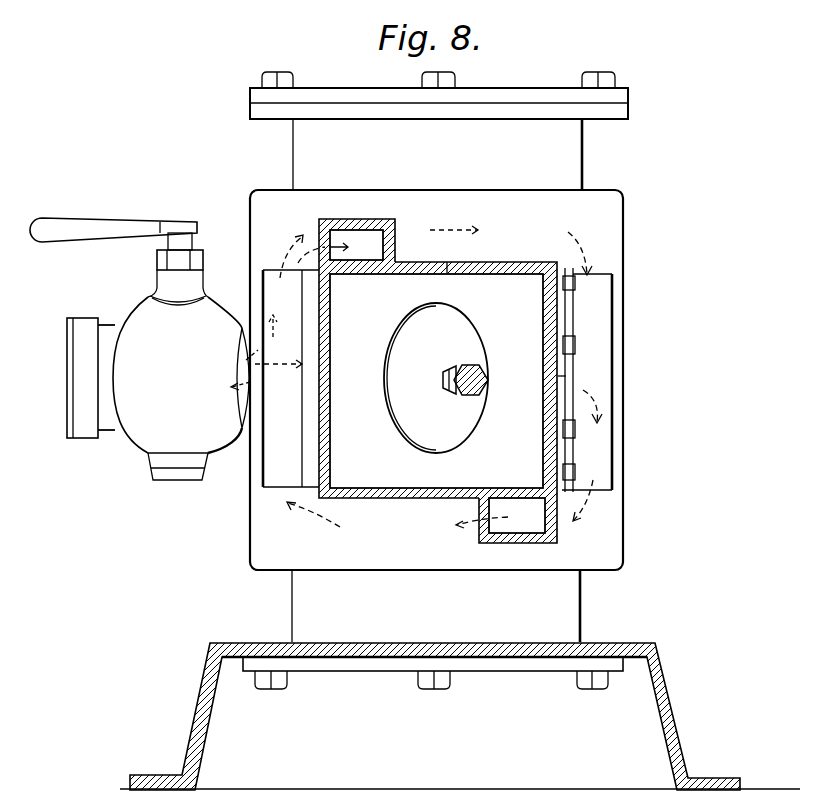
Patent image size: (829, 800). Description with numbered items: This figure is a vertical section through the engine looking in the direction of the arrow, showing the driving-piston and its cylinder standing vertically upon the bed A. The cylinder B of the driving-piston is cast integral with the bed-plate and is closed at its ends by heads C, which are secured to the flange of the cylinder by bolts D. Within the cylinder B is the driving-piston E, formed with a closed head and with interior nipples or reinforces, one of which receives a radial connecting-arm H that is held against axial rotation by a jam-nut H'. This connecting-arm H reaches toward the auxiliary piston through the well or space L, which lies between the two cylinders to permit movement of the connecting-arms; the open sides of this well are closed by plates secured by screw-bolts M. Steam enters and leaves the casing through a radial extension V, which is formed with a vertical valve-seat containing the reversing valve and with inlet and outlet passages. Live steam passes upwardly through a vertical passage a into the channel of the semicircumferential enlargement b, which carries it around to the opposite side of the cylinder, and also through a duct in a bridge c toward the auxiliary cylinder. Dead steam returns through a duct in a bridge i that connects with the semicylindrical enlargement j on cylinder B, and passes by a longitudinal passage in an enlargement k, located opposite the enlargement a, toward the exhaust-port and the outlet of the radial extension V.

The bed A is at (210, 720).
The cylinder of the driving-piston B is at (436, 380).
The heads of cylinder B C is at (356, 89).
The bolts D is at (293, 80).
The driving-piston E is at (436, 378).
The radial connecting-arm H is at (486, 362).
The jam-nut H' is at (436, 393).
The well or space L is at (448, 262).
The screw-bolts M is at (576, 296).
The radial extension V is at (144, 349).
The vertical passage a is at (252, 292).
The semicircumferential enlargement b is at (454, 218).
The bridge c is at (357, 228).
The bridge i is at (560, 530).
The semicylindrical enlargement j is at (346, 527).
The enlargement k is at (623, 341).